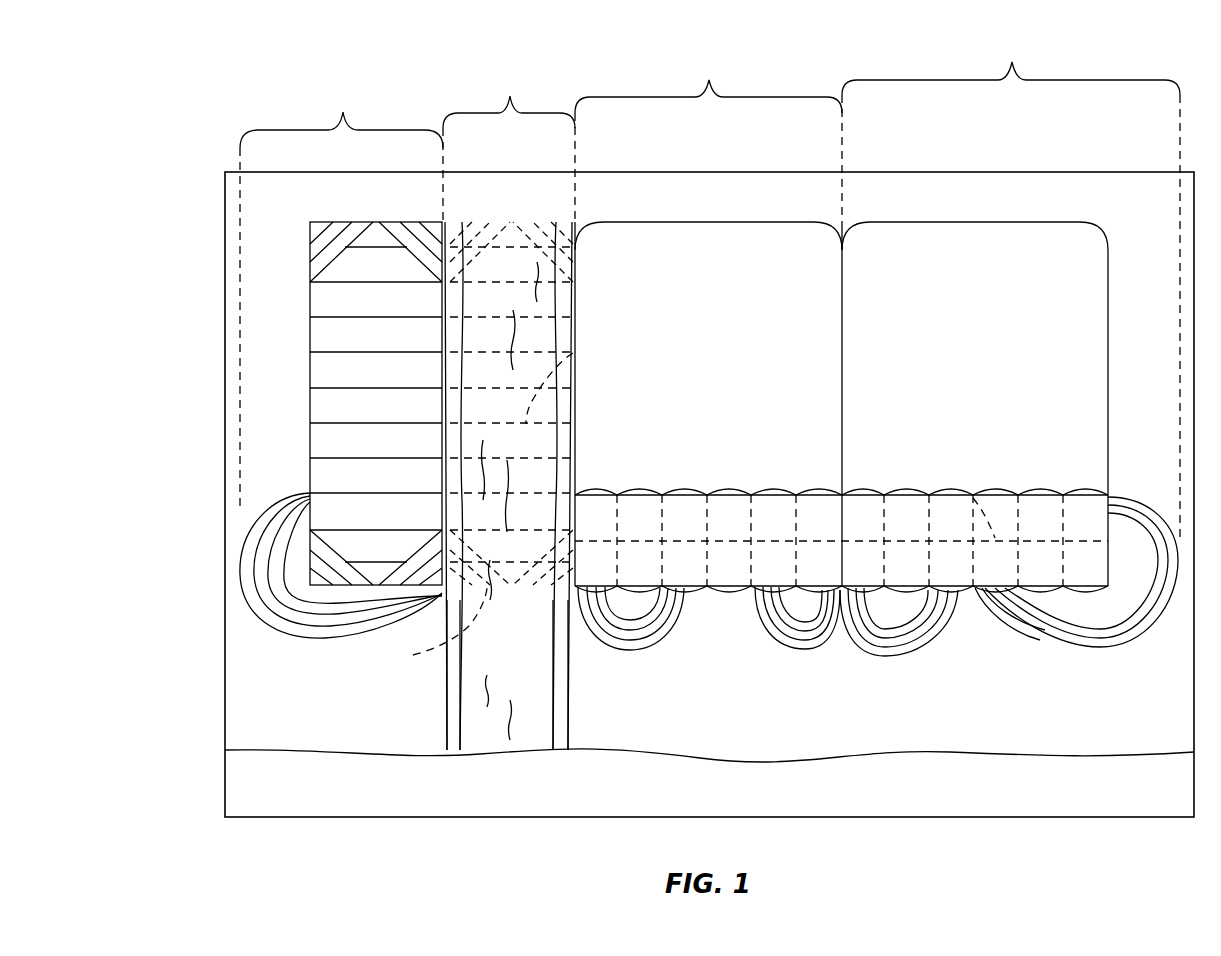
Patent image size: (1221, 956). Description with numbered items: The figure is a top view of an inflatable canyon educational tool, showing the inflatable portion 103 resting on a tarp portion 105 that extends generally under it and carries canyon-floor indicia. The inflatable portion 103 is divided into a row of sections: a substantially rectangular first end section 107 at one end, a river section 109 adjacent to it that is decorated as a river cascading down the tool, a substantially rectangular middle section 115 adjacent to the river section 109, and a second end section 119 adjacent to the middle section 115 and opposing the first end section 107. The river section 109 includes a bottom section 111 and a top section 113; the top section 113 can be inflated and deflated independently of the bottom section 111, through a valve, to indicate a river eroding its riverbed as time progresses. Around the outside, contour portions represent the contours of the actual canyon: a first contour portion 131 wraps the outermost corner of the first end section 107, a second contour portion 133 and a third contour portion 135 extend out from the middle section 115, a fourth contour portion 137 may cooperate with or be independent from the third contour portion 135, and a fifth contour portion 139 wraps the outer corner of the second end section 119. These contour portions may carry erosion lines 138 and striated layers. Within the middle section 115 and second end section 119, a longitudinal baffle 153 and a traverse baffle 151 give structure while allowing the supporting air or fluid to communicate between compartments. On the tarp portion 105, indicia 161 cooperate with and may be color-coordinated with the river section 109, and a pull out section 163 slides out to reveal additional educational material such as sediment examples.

The inflatable portion 103 is at (330, 206).
The tarp portion 105 is at (225, 192).
The first end section 107 is at (341, 334).
The river section 109 is at (509, 330).
The bottom section 111 is at (426, 628).
The top section 113 is at (488, 222).
The middle section 115 is at (708, 318).
The second end section 119 is at (1011, 308).
The first contour portion 131 is at (312, 640).
The second contour portion 133 is at (626, 650).
The third contour portion 135 is at (816, 649).
The fourth contour portion 137 is at (881, 657).
The erosion lines 138 is at (1097, 629).
The fifth contour portion 139 is at (1110, 647).
The traverse baffle 151 is at (928, 515).
The longitudinal baffle 153 is at (576, 353).
The indicia 161 is at (535, 694).
The pull out section 163 is at (446, 727).